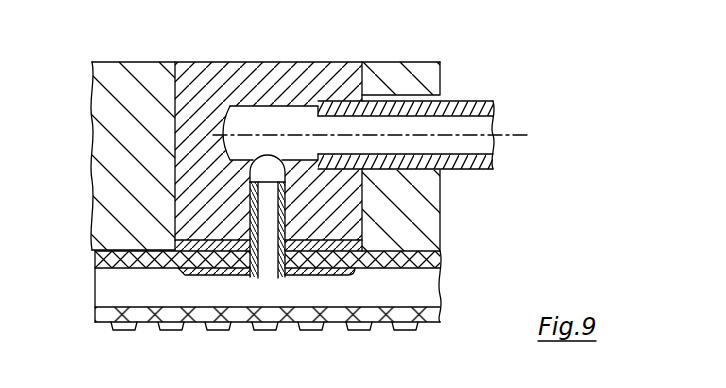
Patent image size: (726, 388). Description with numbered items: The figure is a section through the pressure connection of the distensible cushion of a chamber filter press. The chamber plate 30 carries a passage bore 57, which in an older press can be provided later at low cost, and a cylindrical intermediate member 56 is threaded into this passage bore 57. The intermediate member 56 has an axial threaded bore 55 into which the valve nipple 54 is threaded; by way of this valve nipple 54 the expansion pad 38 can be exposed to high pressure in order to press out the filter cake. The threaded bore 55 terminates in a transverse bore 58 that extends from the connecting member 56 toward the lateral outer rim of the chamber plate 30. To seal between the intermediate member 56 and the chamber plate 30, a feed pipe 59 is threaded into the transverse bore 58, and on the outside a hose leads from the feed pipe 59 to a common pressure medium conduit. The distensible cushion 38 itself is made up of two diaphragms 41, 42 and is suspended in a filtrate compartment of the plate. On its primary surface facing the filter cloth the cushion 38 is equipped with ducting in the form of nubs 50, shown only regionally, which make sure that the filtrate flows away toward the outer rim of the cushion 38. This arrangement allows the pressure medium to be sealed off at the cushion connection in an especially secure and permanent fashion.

The chamber plate 30 is at (135, 100).
The passage bore 57 is at (182, 93).
The cylindrical intermediate member 56 is at (235, 84).
The axial threaded bore 55 is at (262, 160).
The transverse bore 58 is at (302, 123).
The feed pipe 59 is at (478, 168).
The valve nipple 54 is at (263, 250).
The diaphragm 41 is at (427, 261).
The distensible cushion 38 is at (126, 291).
The diaphragm 42 is at (413, 315).
The nubs 50 is at (218, 327).